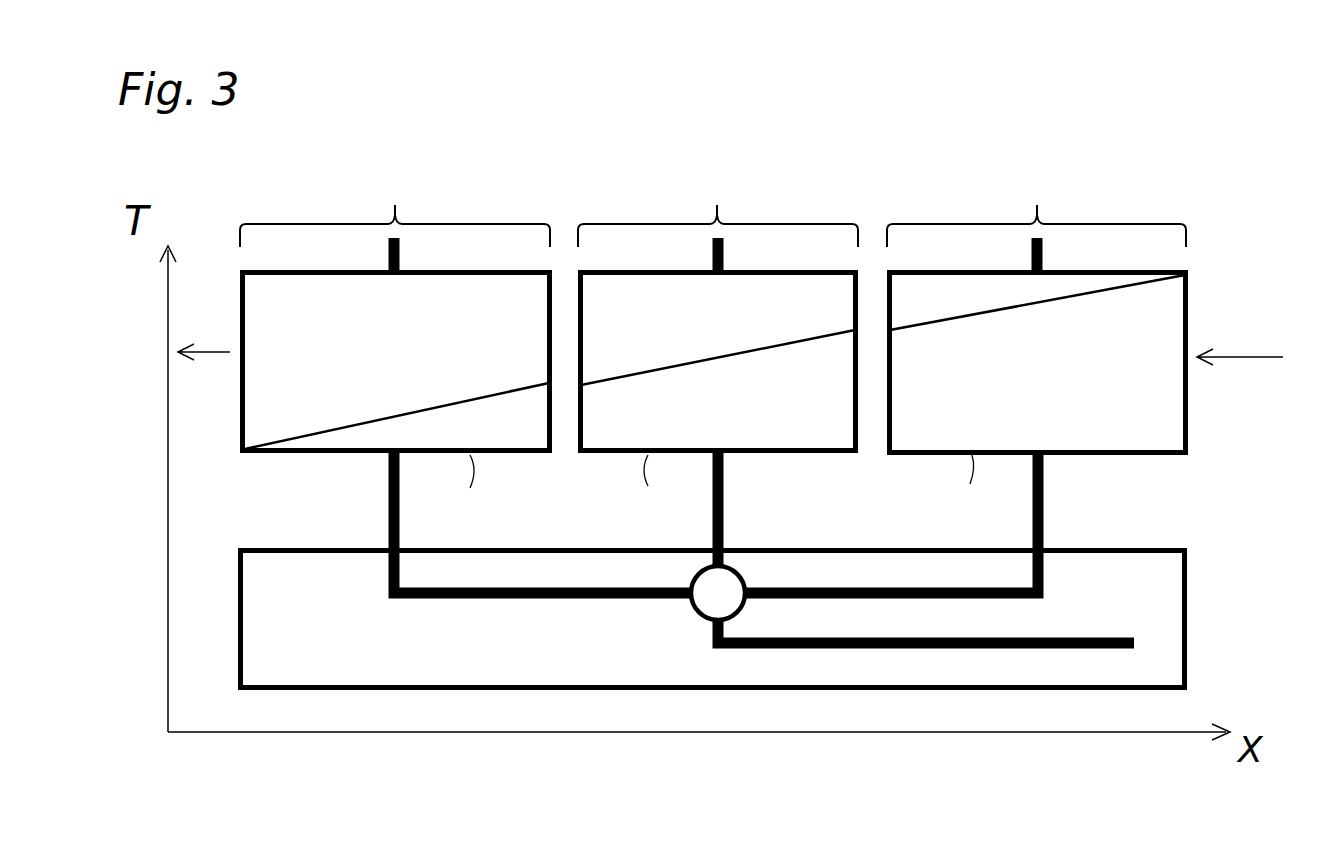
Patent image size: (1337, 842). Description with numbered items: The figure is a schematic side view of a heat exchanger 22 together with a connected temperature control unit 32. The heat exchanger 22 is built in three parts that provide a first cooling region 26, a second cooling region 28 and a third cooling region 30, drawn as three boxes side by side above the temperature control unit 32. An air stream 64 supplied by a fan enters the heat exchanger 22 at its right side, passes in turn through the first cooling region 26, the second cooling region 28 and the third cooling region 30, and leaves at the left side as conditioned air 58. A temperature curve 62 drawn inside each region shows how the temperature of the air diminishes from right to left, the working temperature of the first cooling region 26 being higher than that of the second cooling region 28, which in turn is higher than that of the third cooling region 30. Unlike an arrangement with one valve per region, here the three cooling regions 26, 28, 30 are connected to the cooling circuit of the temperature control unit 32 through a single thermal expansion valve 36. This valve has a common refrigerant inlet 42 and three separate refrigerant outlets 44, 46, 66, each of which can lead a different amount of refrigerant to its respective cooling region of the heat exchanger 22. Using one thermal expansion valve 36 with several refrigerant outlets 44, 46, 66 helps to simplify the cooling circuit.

The heat exchanger 22 is at (728, 488).
The first cooling region 26 is at (1038, 305).
The second cooling region 28 is at (718, 304).
The third cooling region 30 is at (396, 304).
The temperature control unit 32 is at (1190, 582).
The thermal expansion valve 36 is at (700, 616).
The refrigerant inlet 42 is at (1094, 638).
The refrigerant outlet 44 is at (826, 592).
The refrigerant outlet 46 is at (724, 528).
The conditioned air 58 is at (212, 348).
The temperature curve 62 is at (436, 408).
The air stream 64 is at (1222, 342).
The refrigerant outlet 66 is at (636, 600).